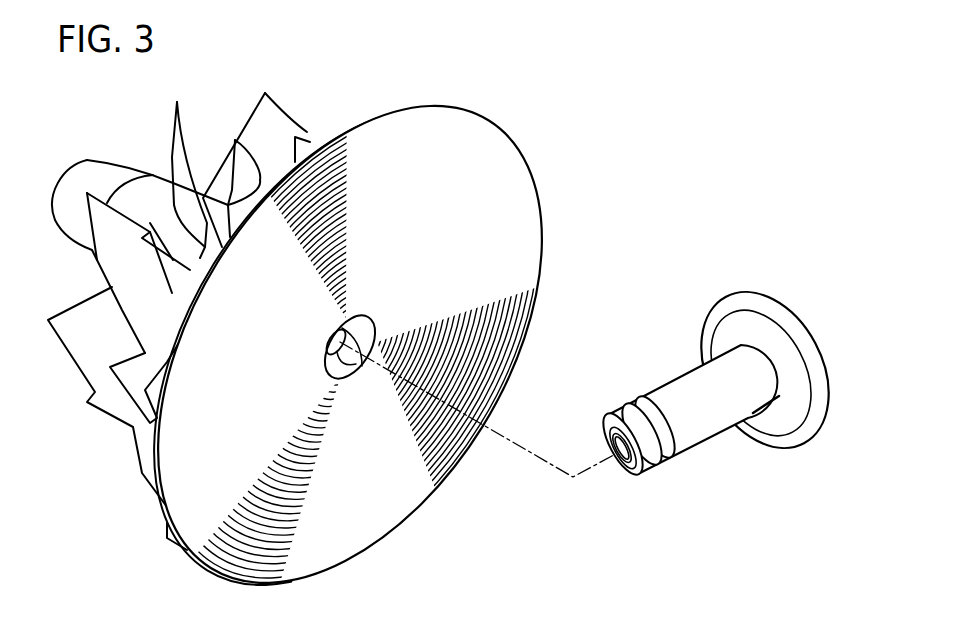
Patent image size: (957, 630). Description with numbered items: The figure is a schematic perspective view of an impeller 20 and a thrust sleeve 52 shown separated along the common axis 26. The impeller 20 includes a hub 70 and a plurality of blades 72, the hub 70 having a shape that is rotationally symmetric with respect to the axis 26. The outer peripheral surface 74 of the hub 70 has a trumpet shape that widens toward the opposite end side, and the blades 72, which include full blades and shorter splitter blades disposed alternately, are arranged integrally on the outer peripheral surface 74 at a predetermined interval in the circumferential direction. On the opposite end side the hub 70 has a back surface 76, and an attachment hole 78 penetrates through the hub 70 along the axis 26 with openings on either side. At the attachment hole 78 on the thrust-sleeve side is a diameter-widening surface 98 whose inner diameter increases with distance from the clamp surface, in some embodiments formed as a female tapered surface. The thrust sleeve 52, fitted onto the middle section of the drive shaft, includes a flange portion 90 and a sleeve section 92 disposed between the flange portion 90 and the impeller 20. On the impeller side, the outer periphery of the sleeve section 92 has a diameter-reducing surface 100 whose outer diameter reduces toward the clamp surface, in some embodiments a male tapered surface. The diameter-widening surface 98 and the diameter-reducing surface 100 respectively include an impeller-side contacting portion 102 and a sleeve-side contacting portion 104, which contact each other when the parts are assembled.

The impeller 20 is at (492, 105).
The hub 70 is at (97, 172).
The blades 72 is at (172, 157).
The outer peripheral surface 74 is at (153, 197).
The back surface 76 is at (483, 172).
The attachment hole 78 is at (349, 380).
The diameter-widening surface 98 is at (360, 328).
The impeller-side contacting portion 102 is at (364, 368).
The axis 26 is at (530, 437).
The thrust sleeve 52 is at (653, 323).
The flange portion 90 is at (748, 292).
The sleeve section 92 is at (680, 385).
The sleeve-side contacting portion 104 is at (618, 418).
The diameter-reducing surface 100 is at (645, 468).